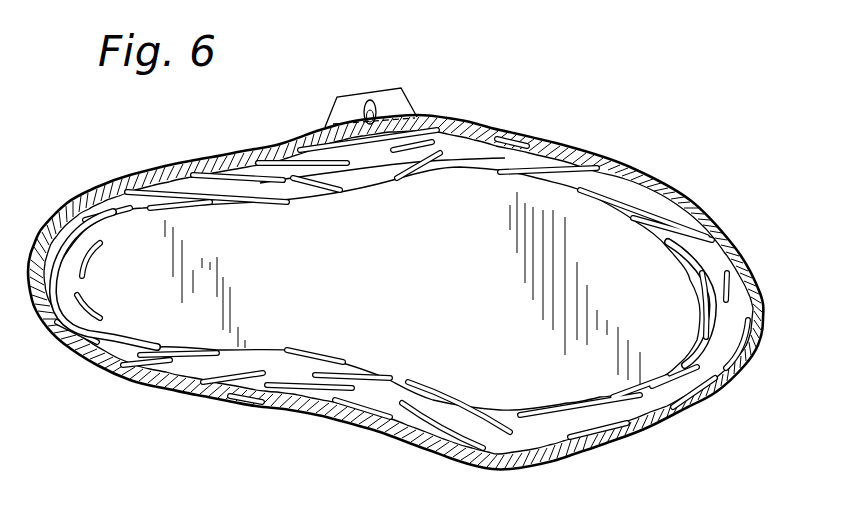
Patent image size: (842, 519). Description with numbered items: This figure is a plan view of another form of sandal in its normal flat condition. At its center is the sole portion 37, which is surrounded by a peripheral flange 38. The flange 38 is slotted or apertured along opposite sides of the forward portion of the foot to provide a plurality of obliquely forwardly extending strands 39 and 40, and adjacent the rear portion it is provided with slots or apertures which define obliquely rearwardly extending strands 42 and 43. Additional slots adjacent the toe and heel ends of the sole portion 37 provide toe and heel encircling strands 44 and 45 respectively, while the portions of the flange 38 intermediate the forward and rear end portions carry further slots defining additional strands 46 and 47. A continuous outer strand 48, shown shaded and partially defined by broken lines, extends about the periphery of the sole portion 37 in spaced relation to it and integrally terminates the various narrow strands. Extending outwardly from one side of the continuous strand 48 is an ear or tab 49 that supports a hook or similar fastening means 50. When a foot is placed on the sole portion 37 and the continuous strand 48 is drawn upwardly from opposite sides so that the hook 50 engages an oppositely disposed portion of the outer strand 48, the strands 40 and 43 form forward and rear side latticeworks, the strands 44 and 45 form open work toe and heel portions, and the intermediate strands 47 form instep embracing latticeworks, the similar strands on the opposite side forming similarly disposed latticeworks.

The sole portion 37 is at (376, 284).
The peripheral flange 38 is at (548, 152).
The obliquely forwardly extending strands 39 is at (687, 240).
The obliquely forwardly extending strands 40 is at (690, 386).
The obliquely rearwardly extending strands 42 is at (233, 183).
The obliquely rearwardly extending strands 43 is at (213, 373).
The toe encircling strands 44 is at (742, 315).
The heel encircling strands 45 is at (75, 300).
The additional strands 46 is at (425, 158).
The intermediate strands 47 is at (427, 410).
The continuous outer strand 48 is at (522, 142).
The ear or tab 49 is at (400, 108).
The hook or similar fastening means 50 is at (372, 101).